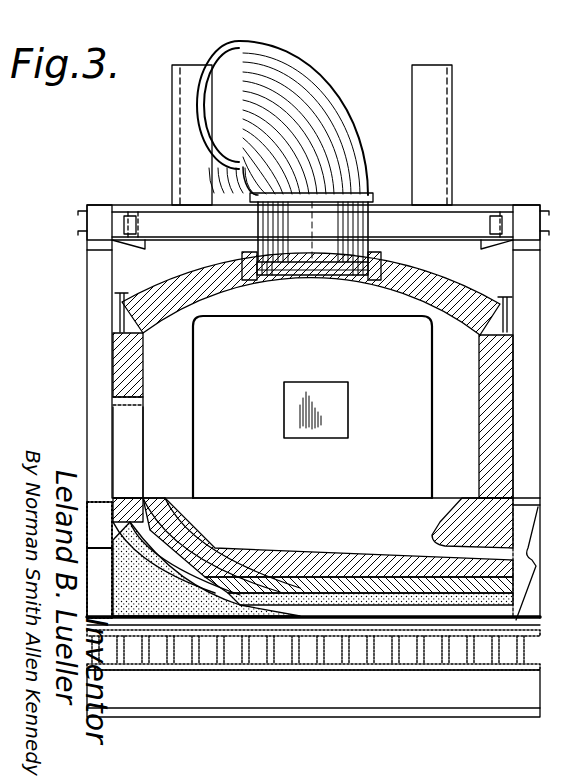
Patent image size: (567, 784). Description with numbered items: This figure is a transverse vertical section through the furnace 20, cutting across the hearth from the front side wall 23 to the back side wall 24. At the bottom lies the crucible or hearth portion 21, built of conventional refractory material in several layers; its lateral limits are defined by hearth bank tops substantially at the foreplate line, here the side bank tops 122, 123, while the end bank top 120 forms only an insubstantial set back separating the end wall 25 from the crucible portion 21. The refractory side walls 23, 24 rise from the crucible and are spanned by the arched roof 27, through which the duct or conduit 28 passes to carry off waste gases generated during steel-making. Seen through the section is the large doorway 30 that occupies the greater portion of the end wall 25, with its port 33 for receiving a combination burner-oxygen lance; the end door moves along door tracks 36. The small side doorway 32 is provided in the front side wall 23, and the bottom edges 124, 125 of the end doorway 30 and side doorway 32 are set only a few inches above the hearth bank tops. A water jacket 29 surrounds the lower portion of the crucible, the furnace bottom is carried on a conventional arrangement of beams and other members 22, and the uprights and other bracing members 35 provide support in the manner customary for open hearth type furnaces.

The furnace 20 is at (74, 379).
The crucible or hearth portion 21 is at (308, 548).
The beams and other supporting members 22 is at (233, 650).
The front side wall 23 is at (113, 347).
The back side wall 24 is at (493, 368).
The end wall 25 is at (157, 421).
The arched roof 27 is at (214, 288).
The duct or conduit 28 is at (322, 100).
The water jacket 29 is at (87, 530).
The doorway 30 is at (193, 378).
The side doorway 32 is at (113, 407).
The port 33 is at (340, 407).
The uprights and bracing members 35 is at (79, 256).
The door tracks 36 is at (181, 137).
The end bank top 120 is at (190, 494).
The side bank top 122 is at (151, 498).
The side bank top 123 is at (473, 498).
The bottom edge of end doorway 124 is at (325, 498).
The bottom edge of side doorway 125 is at (122, 500).